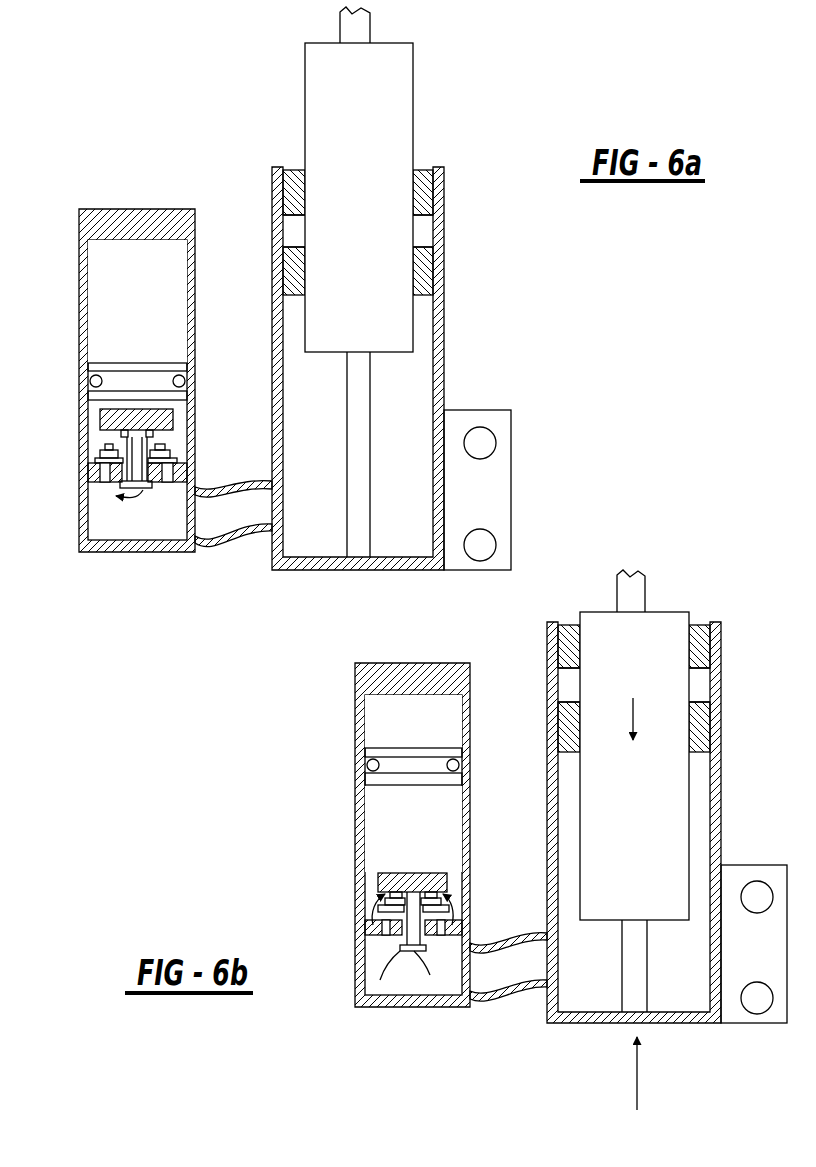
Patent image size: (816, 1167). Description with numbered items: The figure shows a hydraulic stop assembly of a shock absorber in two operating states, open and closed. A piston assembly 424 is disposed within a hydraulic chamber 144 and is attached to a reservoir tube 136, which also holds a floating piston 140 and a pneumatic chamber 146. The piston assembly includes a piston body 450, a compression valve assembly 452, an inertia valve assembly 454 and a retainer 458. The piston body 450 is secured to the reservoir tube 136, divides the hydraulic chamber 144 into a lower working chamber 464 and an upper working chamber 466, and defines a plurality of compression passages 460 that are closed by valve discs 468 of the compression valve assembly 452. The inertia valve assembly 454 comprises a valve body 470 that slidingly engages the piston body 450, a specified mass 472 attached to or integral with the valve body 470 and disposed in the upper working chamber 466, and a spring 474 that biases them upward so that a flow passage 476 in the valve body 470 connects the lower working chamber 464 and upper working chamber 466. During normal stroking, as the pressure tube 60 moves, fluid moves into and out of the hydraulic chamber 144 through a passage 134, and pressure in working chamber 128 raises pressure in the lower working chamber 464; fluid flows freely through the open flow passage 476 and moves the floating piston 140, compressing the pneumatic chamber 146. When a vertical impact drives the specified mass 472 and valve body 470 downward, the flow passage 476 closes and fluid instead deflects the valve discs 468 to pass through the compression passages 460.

In FIG. 6A, the pressure tube 60 is at (352, 291).
In FIG. 6B, the pressure tube 60 is at (623, 859).
In FIG. 6A, the working chamber 128 is at (410, 405).
In FIG. 6B, the working chamber 128 is at (680, 988).
In FIG. 6B, the passage 134 is at (497, 965).
In FIG. 6A, the reservoir tube 136 is at (79, 308).
In FIG. 6B, the reservoir tube 136 is at (355, 703).
In FIG. 6B, the floating piston 140 is at (380, 750).
In FIG. 6A, the hydraulic chamber 144 is at (180, 440).
In FIG. 6B, the hydraulic chamber 144 is at (434, 837).
In FIG. 6A, the pneumatic chamber 146 is at (145, 257).
In FIG. 6B, the pneumatic chamber 146 is at (418, 713).
In FIG. 6A, the piston assembly 424 is at (108, 432).
In FIG. 6B, the piston assembly 424 is at (396, 851).
In FIG. 6A, the piston body 450 is at (100, 468).
In FIG. 6A, the compression valve assembly 452 is at (178, 443).
In FIG. 6A, the inertia valve assembly 454 is at (147, 505).
In FIG. 6A, the retainer 458 is at (92, 378).
In FIG. 6A, the compression passages 460 is at (103, 485).
In FIG. 6B, the compression passages 460 is at (368, 930).
In FIG. 6A, the lower working chamber 464 is at (170, 522).
In FIG. 6A, the upper working chamber 466 is at (145, 400).
In FIG. 6B, the upper working chamber 466 is at (428, 813).
In FIG. 6A, the valve discs 468 is at (116, 440).
In FIG. 6B, the valve discs 468 is at (378, 888).
In FIG. 6B, the valve body 470 is at (410, 960).
In FIG. 6B, the specified mass 472 is at (383, 880).
In FIG. 6B, the spring 474 is at (447, 886).
In FIG. 6B, the flow passage 476 is at (400, 950).